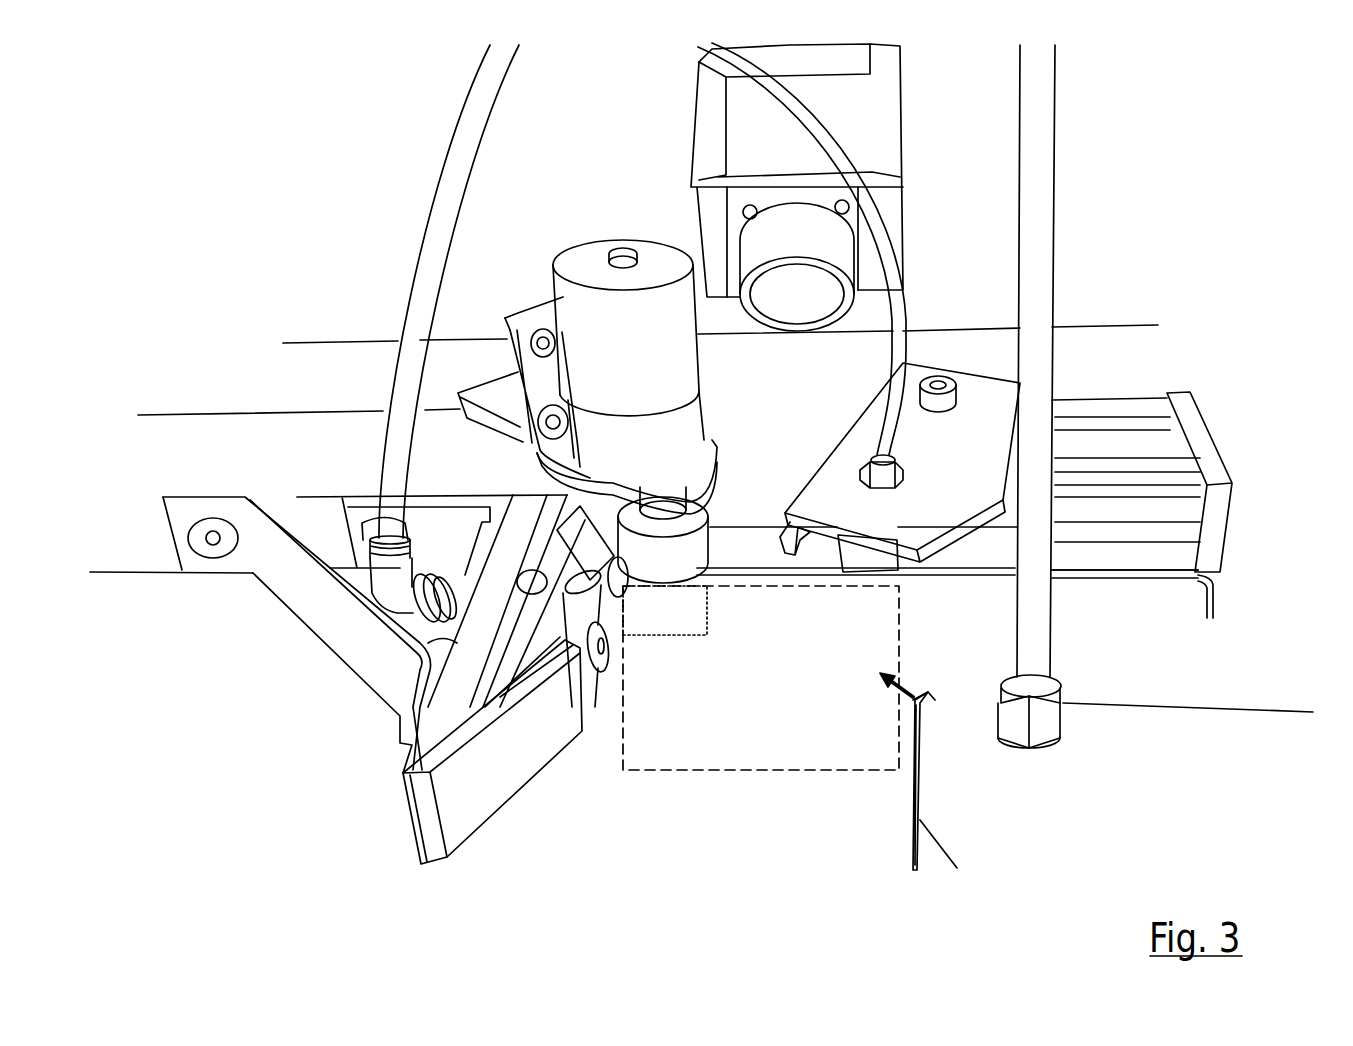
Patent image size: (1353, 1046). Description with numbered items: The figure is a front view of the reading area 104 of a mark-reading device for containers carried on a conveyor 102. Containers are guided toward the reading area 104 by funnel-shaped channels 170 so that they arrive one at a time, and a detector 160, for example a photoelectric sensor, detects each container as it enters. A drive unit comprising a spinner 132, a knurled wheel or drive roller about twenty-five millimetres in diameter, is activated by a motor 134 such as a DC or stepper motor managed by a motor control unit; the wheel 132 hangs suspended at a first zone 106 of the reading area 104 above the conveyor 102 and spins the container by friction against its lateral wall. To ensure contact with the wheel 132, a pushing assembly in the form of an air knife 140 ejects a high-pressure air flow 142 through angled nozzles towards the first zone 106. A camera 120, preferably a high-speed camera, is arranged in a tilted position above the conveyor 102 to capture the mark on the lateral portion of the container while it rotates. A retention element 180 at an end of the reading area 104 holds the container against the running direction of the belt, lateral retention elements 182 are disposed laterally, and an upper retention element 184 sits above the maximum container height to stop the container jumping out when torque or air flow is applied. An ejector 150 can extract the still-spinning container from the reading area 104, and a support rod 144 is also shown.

The conveyor 102 is at (763, 827).
The reading area 104 is at (828, 745).
The first zone 106 is at (690, 607).
The camera 120 is at (828, 100).
The spinner 132 is at (643, 550).
The motor 134 is at (612, 437).
The air knife 140 is at (918, 707).
The high-pressure air flow 142 is at (912, 688).
The support rod 144 is at (1037, 632).
The ejector 150 is at (410, 615).
The detector 160 is at (883, 467).
The funnel-shaped channel 170 is at (474, 812).
The retention element 180 is at (867, 550).
The lateral retention element 182 is at (578, 647).
The upper retention element 184 is at (805, 540).